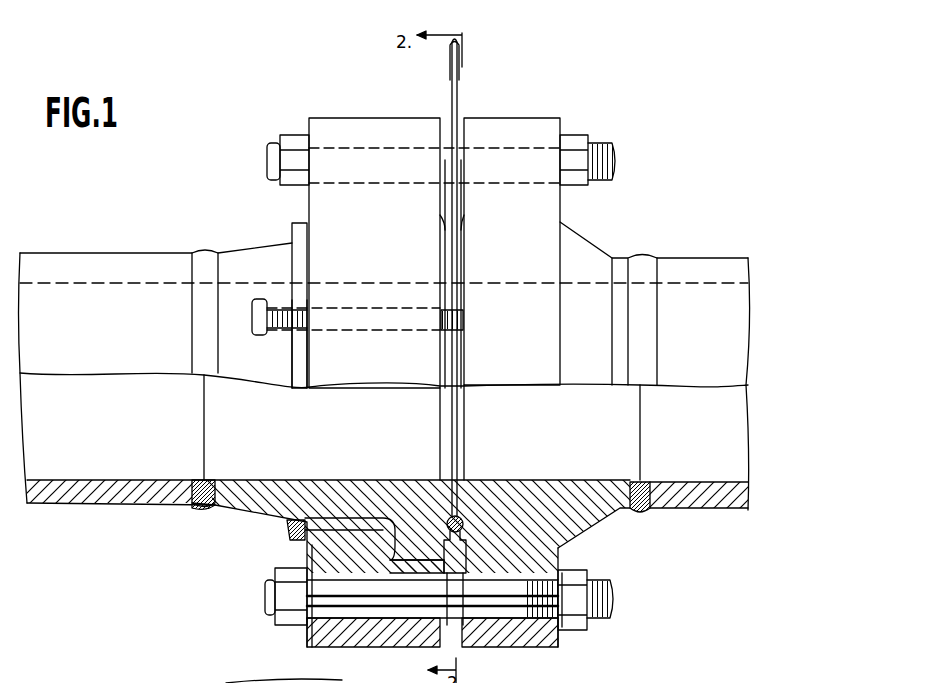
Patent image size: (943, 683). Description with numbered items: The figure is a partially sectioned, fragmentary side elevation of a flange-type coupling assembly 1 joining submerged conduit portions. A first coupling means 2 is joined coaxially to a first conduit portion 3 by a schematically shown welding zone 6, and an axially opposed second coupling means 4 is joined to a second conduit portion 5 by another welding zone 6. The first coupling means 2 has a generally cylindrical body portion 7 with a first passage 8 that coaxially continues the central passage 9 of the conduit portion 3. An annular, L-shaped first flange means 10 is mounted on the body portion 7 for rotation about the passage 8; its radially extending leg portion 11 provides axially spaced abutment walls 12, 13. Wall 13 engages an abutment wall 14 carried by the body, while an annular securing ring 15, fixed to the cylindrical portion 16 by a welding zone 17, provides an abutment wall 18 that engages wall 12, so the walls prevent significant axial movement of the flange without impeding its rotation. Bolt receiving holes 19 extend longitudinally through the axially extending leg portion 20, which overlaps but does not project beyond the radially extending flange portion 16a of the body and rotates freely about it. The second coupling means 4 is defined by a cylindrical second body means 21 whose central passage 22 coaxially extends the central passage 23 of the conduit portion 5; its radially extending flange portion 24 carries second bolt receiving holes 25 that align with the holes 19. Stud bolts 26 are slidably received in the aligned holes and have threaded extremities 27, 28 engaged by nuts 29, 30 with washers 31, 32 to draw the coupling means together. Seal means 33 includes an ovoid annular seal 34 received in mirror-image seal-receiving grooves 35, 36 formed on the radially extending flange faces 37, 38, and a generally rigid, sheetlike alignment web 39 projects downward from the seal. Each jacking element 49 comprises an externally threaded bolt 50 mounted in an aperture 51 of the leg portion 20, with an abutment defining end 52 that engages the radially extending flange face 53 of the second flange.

The flange-type coupling assembly 1 is at (493, 106).
The first coupling means 2 is at (250, 258).
The first conduit portion 3 is at (78, 260).
The second coupling means 4 is at (580, 249).
The second conduit portion 5 is at (695, 262).
The welding zone 6 is at (205, 258).
The body portion 7 is at (225, 490).
The first passage 8 is at (327, 428).
The central passage 9 is at (96, 420).
The first flange means 10 is at (410, 648).
The leg portion 11 is at (306, 572).
The abutment wall 12 is at (323, 550).
The abutment wall 13 is at (393, 545).
The abutment wall 14 is at (404, 505).
The annular securing ring 15 is at (297, 520).
The cylindrical portion 16 is at (233, 497).
The flange portion 16a is at (417, 544).
The welding zone 17 is at (285, 528).
The abutment wall 18 is at (322, 520).
The bolt receiving holes 19 is at (307, 640).
The leg portion 20 is at (404, 678).
The second body means 21 is at (520, 495).
The central passage 22 is at (572, 428).
The central passage 23 is at (707, 438).
The flange portion 24 is at (545, 635).
The second bolt receiving holes 25 is at (530, 632).
The stud bolts 26 is at (474, 645).
The threaded extremity 27 is at (356, 636).
The threaded extremity 28 is at (560, 645).
The nut 29 is at (290, 600).
The nut 30 is at (585, 625).
The washer 31 is at (292, 632).
The washer 32 is at (565, 570).
The seal means 33 is at (452, 103).
The annular seal 34 is at (480, 510).
The seal-receiving groove 35 is at (440, 518).
The seal-receiving groove 36 is at (458, 517).
The flange face 37 is at (438, 388).
The flange face 38 is at (456, 390).
The alignment web 39 is at (466, 548).
The jacking element 49 is at (305, 333).
The externally threaded bolt 50 is at (260, 320).
The aperture 51 is at (345, 330).
The abutment defining end 52 is at (460, 320).
The flange face 53 is at (512, 632).